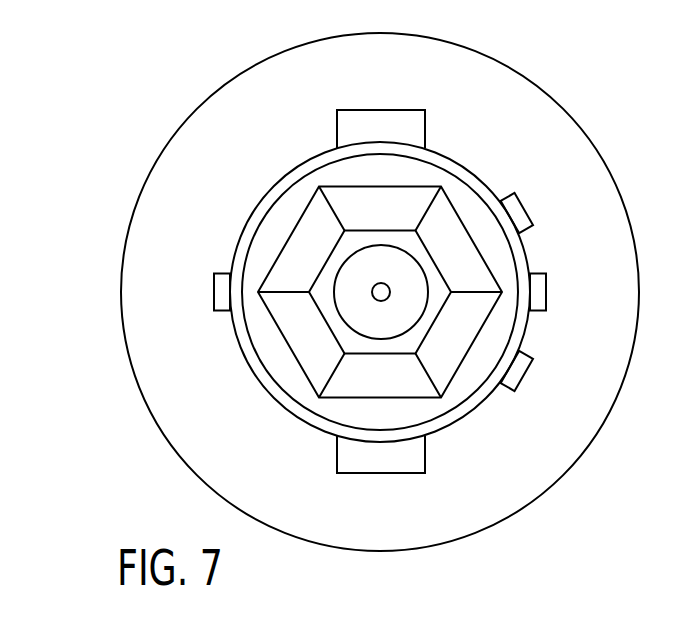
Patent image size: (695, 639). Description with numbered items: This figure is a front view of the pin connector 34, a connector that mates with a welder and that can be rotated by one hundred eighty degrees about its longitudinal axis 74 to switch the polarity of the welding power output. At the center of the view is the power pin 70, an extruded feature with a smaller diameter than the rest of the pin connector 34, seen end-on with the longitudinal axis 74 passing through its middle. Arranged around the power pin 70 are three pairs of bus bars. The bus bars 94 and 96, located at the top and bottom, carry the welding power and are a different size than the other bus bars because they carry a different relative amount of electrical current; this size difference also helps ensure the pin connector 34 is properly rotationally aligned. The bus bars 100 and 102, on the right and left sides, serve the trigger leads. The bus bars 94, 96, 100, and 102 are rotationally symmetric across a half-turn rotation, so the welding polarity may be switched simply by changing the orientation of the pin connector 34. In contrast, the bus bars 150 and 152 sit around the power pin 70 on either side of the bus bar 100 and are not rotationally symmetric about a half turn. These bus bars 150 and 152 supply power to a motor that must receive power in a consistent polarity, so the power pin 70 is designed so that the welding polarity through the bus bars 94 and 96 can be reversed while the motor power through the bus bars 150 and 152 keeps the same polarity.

The pin connector 34 is at (84, 151).
The power pin 70 is at (267, 182).
The longitudinal axis 74 is at (374, 297).
The bus bar 94 is at (380, 110).
The bus bar 96 is at (380, 473).
The bus bar 100 is at (546, 293).
The bus bar 102 is at (214, 292).
The bus bar 150 is at (527, 380).
The bus bar 152 is at (527, 205).